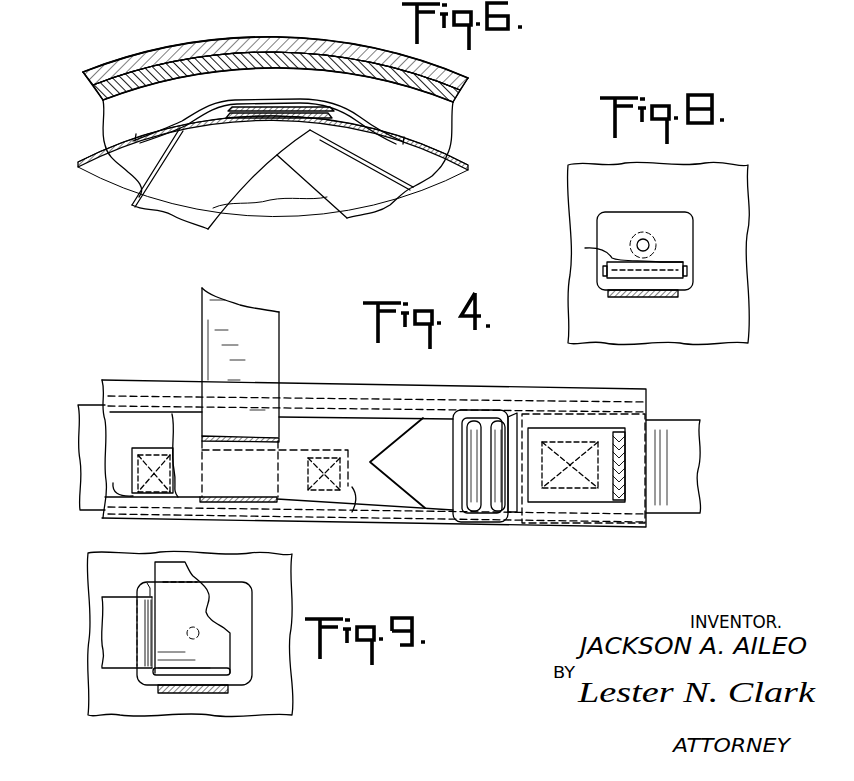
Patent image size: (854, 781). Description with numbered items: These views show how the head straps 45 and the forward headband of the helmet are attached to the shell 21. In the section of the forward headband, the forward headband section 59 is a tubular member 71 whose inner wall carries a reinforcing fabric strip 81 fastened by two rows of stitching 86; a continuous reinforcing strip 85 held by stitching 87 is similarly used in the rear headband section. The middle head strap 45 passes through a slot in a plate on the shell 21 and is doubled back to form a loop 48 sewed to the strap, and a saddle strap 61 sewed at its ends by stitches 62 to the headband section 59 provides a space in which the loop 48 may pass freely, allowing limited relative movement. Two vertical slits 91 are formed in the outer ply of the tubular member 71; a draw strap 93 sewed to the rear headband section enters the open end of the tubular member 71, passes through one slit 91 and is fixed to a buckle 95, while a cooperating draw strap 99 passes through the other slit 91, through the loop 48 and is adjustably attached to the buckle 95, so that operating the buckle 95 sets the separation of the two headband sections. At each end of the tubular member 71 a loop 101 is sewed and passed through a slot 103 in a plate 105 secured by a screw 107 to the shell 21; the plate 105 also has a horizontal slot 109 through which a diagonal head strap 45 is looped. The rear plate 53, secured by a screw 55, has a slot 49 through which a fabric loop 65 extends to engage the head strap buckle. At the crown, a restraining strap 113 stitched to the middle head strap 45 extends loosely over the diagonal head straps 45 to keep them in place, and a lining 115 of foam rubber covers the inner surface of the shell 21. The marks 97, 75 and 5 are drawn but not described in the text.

In FIG. 6, the shell 21 is at (330, 44).
In FIG. 8, the shell 21 is at (727, 323).
In FIG. 9, the shell 21 is at (280, 582).
In FIG. 6, the head strap 45 is at (123, 152).
In FIG. 4, the head strap 45 is at (263, 331).
In FIG. 9, the head strap 45 is at (173, 567).
In FIG. 6, the restraining strap 113 is at (210, 107).
In FIG. 6, the lining 115 is at (323, 75).
In FIG. 8, the reinforcing fabric strip 85 is at (632, 12).
In FIG. 8, the stitching 87 is at (676, 9).
In FIG. 8, the section line 5 is at (717, 2).
In FIG. 8, the plate 53 is at (686, 224).
In FIG. 8, the screw 55 is at (647, 238).
In FIG. 8, the slot 49 is at (673, 262).
In FIG. 8, the fabric loop 65 is at (682, 311).
In FIG. 4, the reinforcing fabric strip 81 is at (88, 493).
In FIG. 4, the stitching 86 is at (140, 412).
In FIG. 4, the draw strap 99 is at (313, 428).
In FIG. 4, the stitches 62 is at (148, 455).
In FIG. 4, the saddle strap 61 is at (378, 546).
In FIG. 4, the loop 48 is at (267, 503).
In FIG. 4, the tongue plate 97 is at (437, 493).
In FIG. 4, the buckle 75 is at (453, 399).
In FIG. 4, the buckle 95 is at (478, 512).
In FIG. 4, the slit 91 is at (517, 430).
In FIG. 4, the tubular member 71 is at (547, 507).
In FIG. 4, the loop 101 is at (618, 502).
In FIG. 9, the loop 101 is at (118, 655).
In FIG. 4, the forward headband section 59 is at (606, 538).
In FIG. 4, the draw strap 93 is at (688, 442).
In FIG. 9, the slot 103 is at (147, 583).
In FIG. 9, the plate 105 is at (223, 584).
In FIG. 9, the screw 107 is at (200, 627).
In FIG. 9, the slot 109 is at (237, 670).